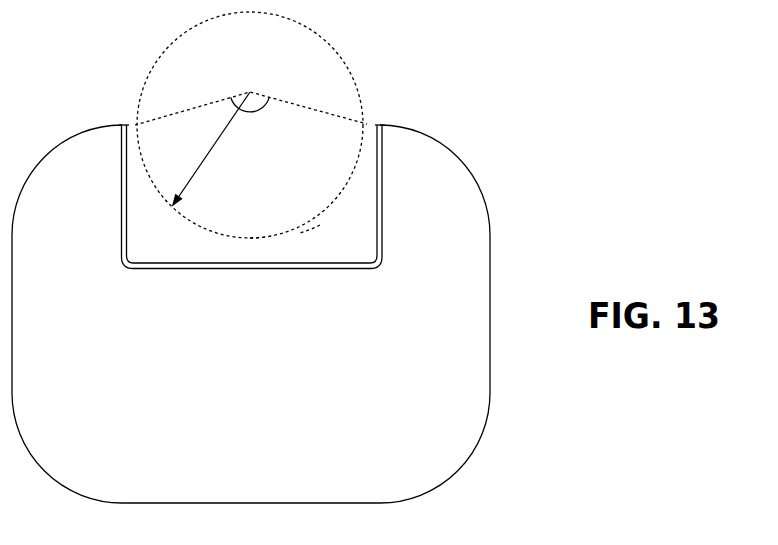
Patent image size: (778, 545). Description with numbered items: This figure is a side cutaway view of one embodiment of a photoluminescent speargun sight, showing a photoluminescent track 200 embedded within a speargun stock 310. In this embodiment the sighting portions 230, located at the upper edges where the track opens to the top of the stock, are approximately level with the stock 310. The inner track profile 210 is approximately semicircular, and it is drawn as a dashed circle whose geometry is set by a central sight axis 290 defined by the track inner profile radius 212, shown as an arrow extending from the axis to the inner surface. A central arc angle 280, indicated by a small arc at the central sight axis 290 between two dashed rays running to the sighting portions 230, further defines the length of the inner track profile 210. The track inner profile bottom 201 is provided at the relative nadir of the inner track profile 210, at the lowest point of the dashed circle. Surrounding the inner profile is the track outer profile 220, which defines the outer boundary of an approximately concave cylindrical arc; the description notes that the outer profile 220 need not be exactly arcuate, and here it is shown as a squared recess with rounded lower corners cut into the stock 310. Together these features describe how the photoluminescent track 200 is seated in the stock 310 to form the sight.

The photoluminescent track 200 is at (179, 235).
The track inner profile bottom 201 is at (255, 228).
The inner track profile 210 is at (308, 226).
The track inner profile radius 212 is at (224, 130).
The track outer profile 220 is at (384, 212).
The sighting portions 230 is at (133, 123).
The central arc angle 280 is at (266, 108).
The central sight axis 290 is at (250, 92).
The speargun stock 310 is at (173, 356).